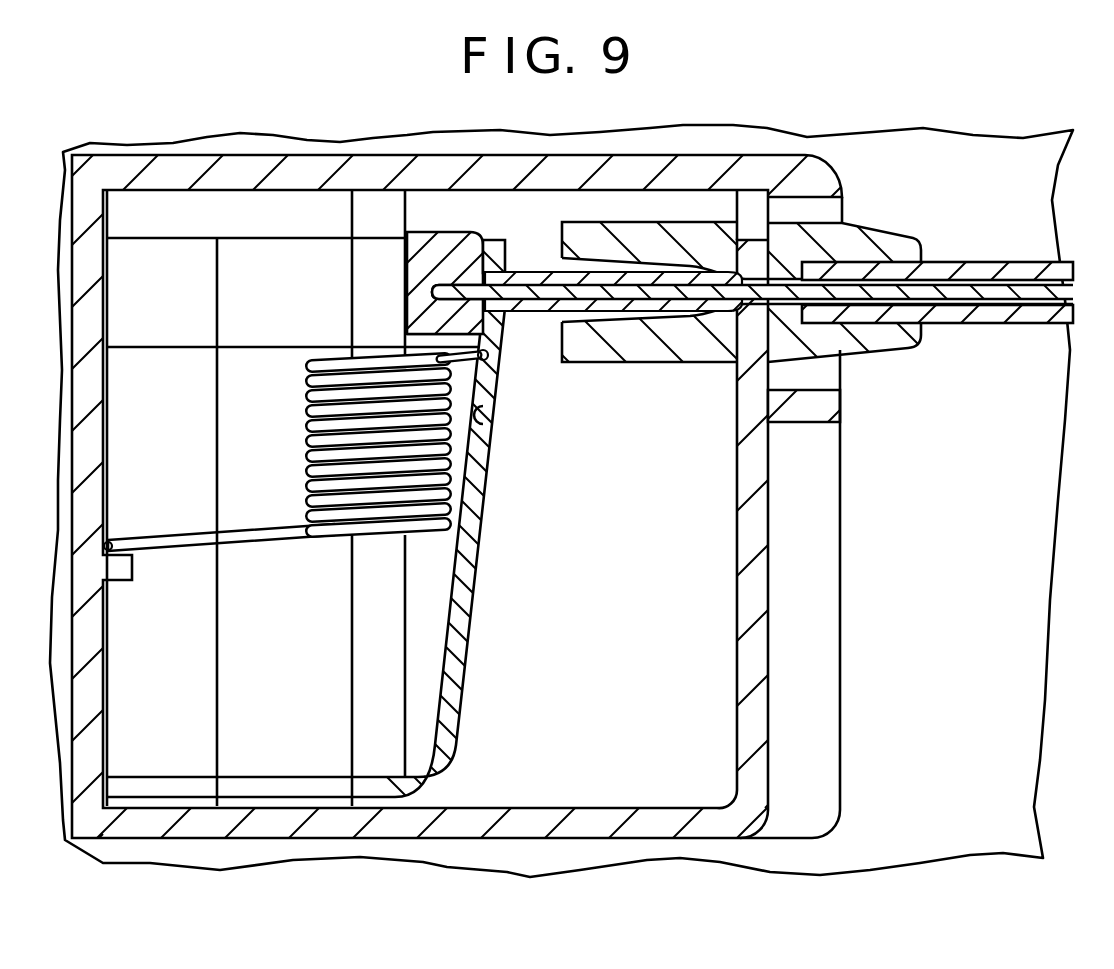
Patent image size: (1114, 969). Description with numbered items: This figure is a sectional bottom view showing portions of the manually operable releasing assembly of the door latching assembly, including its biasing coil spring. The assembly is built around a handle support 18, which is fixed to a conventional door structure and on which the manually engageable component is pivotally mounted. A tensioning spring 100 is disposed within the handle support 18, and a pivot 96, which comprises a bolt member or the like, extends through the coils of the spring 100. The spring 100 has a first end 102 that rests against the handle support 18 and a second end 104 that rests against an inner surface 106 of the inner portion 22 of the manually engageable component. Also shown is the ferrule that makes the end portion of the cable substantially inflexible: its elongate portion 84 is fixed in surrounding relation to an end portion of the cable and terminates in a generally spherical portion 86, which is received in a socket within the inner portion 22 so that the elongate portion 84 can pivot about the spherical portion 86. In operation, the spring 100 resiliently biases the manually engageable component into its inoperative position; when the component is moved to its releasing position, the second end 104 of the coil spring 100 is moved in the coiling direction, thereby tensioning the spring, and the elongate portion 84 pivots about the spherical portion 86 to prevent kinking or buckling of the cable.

The handle support 18 is at (700, 825).
The inner portion of the manually engageable component 22 is at (482, 492).
The elongate portion of the ferrule 84 is at (546, 272).
The spherical portion of the ferrule 86 is at (443, 250).
The pivot 96 is at (363, 710).
The tensioning spring 100 is at (327, 515).
The first end of the spring 102 is at (145, 540).
The second end of the spring 104 is at (478, 368).
The inner surface of the inner portion 106 is at (485, 425).